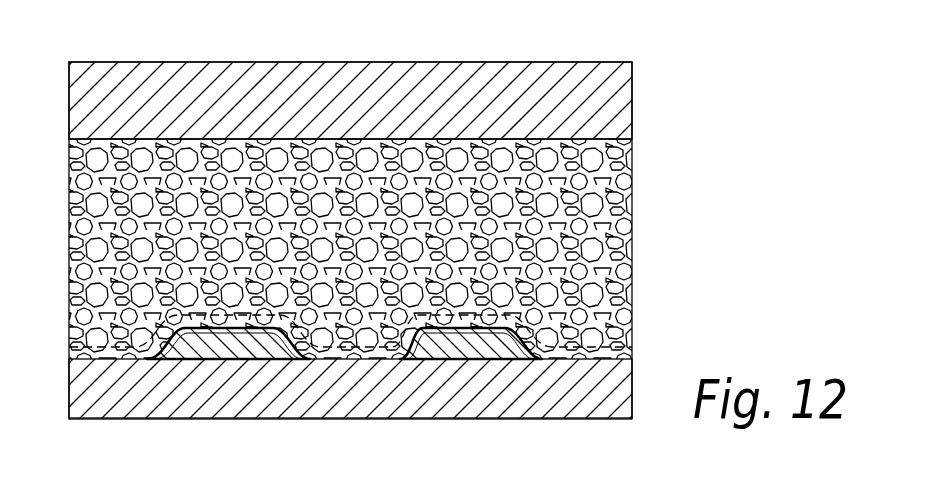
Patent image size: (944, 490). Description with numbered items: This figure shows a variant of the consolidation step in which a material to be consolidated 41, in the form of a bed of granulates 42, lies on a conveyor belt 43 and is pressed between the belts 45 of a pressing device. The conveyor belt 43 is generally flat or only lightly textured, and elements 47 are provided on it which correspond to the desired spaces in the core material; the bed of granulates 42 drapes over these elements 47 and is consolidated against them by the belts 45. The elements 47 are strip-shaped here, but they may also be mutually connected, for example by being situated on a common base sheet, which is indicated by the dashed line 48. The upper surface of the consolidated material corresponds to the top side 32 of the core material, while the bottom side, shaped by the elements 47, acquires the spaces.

The material to be consolidated 41 is at (670, 176).
The granulates 42 is at (628, 273).
The conveyor belt 43 is at (578, 407).
The belts 45 is at (191, 92).
The elements 47 is at (277, 348).
The dashed line 48 is at (538, 352).
The top side 32 is at (510, 137).